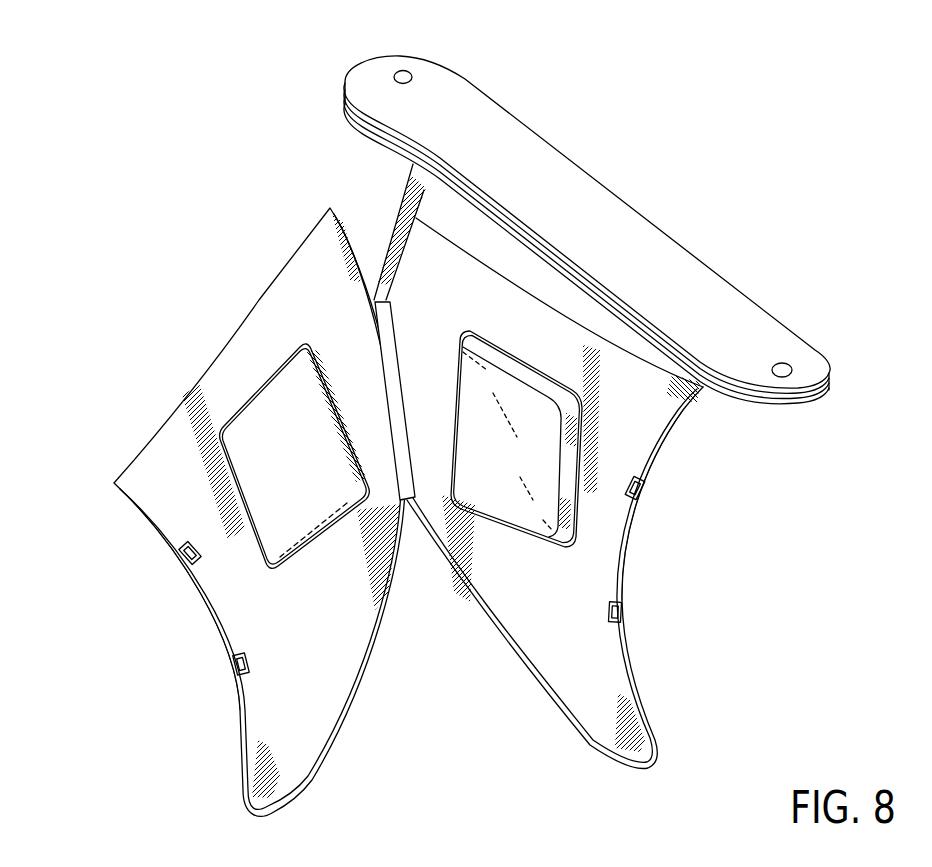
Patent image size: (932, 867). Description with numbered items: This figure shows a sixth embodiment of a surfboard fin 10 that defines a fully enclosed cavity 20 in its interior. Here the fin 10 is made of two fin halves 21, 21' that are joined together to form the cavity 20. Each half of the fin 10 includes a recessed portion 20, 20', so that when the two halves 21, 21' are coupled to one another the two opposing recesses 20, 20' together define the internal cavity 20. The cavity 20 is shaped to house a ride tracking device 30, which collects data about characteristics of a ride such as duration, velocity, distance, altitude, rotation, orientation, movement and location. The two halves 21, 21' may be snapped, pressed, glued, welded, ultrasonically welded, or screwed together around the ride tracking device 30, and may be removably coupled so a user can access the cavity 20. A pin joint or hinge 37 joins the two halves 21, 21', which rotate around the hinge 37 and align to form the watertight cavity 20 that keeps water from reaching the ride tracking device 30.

The fin 10 is at (706, 173).
The cavity 20 is at (528, 466).
The recessed portion 20' is at (259, 512).
The fin half 21 is at (656, 516).
The fin half 21' is at (181, 596).
The ride tracking device 30 is at (512, 465).
The hinge 37 is at (412, 490).